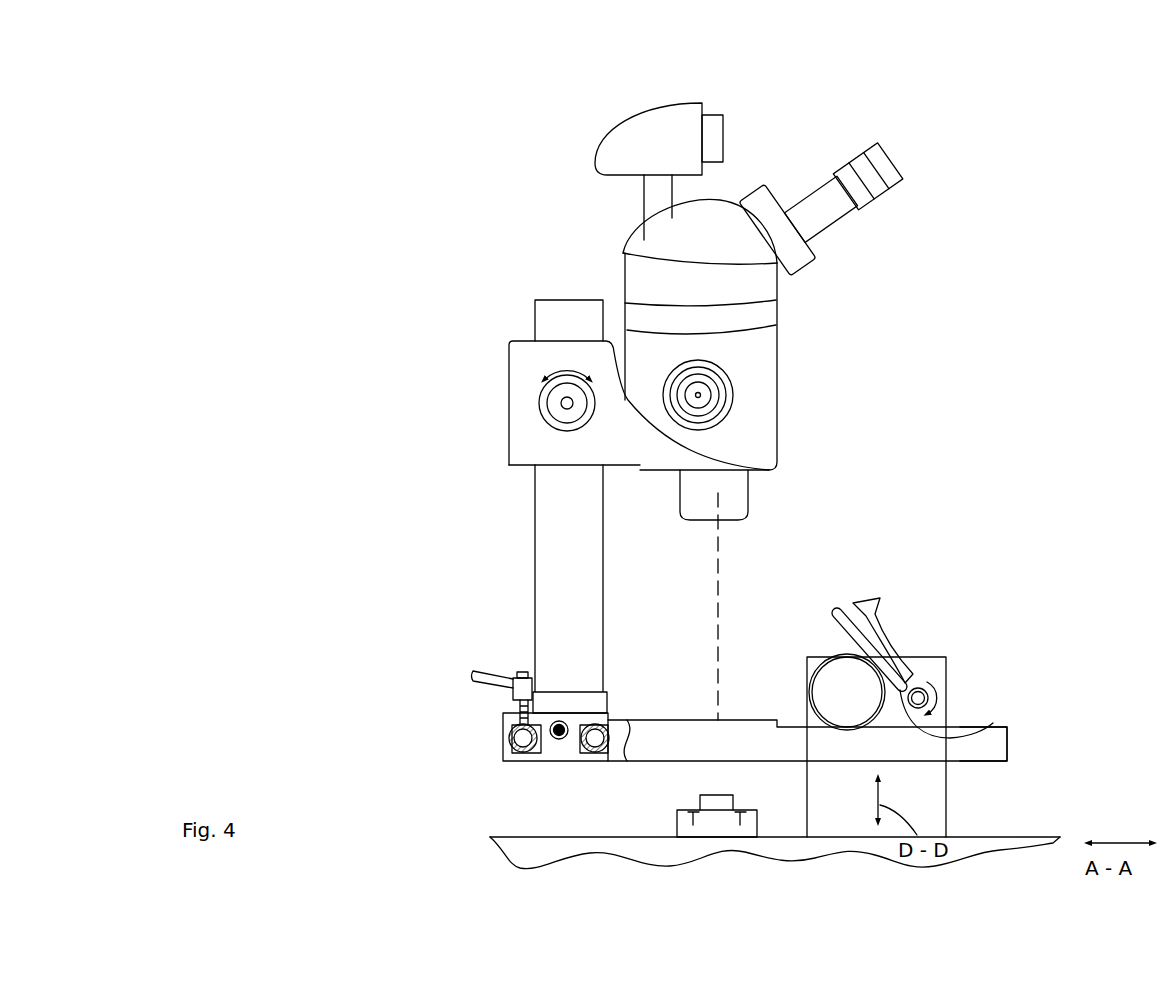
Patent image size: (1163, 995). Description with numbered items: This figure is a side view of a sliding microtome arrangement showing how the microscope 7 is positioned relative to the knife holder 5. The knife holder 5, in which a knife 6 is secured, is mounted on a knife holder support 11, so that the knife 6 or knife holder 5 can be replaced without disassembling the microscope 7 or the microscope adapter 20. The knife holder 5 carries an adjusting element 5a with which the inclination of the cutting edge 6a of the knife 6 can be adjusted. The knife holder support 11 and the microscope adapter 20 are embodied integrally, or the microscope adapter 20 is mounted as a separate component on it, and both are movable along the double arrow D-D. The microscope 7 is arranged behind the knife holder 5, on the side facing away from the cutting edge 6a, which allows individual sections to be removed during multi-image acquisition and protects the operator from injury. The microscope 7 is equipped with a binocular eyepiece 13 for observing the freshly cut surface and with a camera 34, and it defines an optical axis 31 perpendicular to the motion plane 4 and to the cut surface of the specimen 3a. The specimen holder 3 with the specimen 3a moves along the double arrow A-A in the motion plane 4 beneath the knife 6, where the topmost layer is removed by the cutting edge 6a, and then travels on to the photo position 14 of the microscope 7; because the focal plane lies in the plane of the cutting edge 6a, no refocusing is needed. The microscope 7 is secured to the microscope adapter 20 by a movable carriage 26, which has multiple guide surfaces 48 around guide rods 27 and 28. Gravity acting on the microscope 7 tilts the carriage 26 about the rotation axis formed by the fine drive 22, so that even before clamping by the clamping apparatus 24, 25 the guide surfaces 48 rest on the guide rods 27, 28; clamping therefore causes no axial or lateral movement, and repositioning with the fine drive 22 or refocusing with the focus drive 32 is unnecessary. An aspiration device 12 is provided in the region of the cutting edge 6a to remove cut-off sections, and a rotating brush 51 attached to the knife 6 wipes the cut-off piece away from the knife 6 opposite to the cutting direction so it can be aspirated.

The camera 34 is at (648, 140).
The binocular eyepiece 13 is at (832, 215).
The microscope 7 is at (762, 350).
The focus drive 32 is at (547, 420).
The optical axis 31 is at (717, 600).
The microscope adapter 20 is at (708, 755).
The knife holder support 11 is at (987, 748).
The guide rod 27 is at (510, 740).
The carriage 26 is at (540, 757).
The guide rod 28 is at (586, 753).
The guide surfaces 48 is at (510, 752).
The fine drive 22 is at (559, 742).
The clamping apparatus 24 is at (475, 670).
The clamping apparatus 25 is at (475, 670).
The knife holder 5 is at (918, 665).
The adjusting element 5a is at (822, 673).
The knife 6 is at (837, 613).
The aspiration device 12 is at (870, 600).
The rotating brush 51 is at (927, 683).
The cutting edge 6a is at (988, 726).
The specimen holder 3 is at (697, 840).
The specimen 3a is at (730, 792).
The photo position 14 is at (707, 840).
The motion plane 4 is at (490, 837).